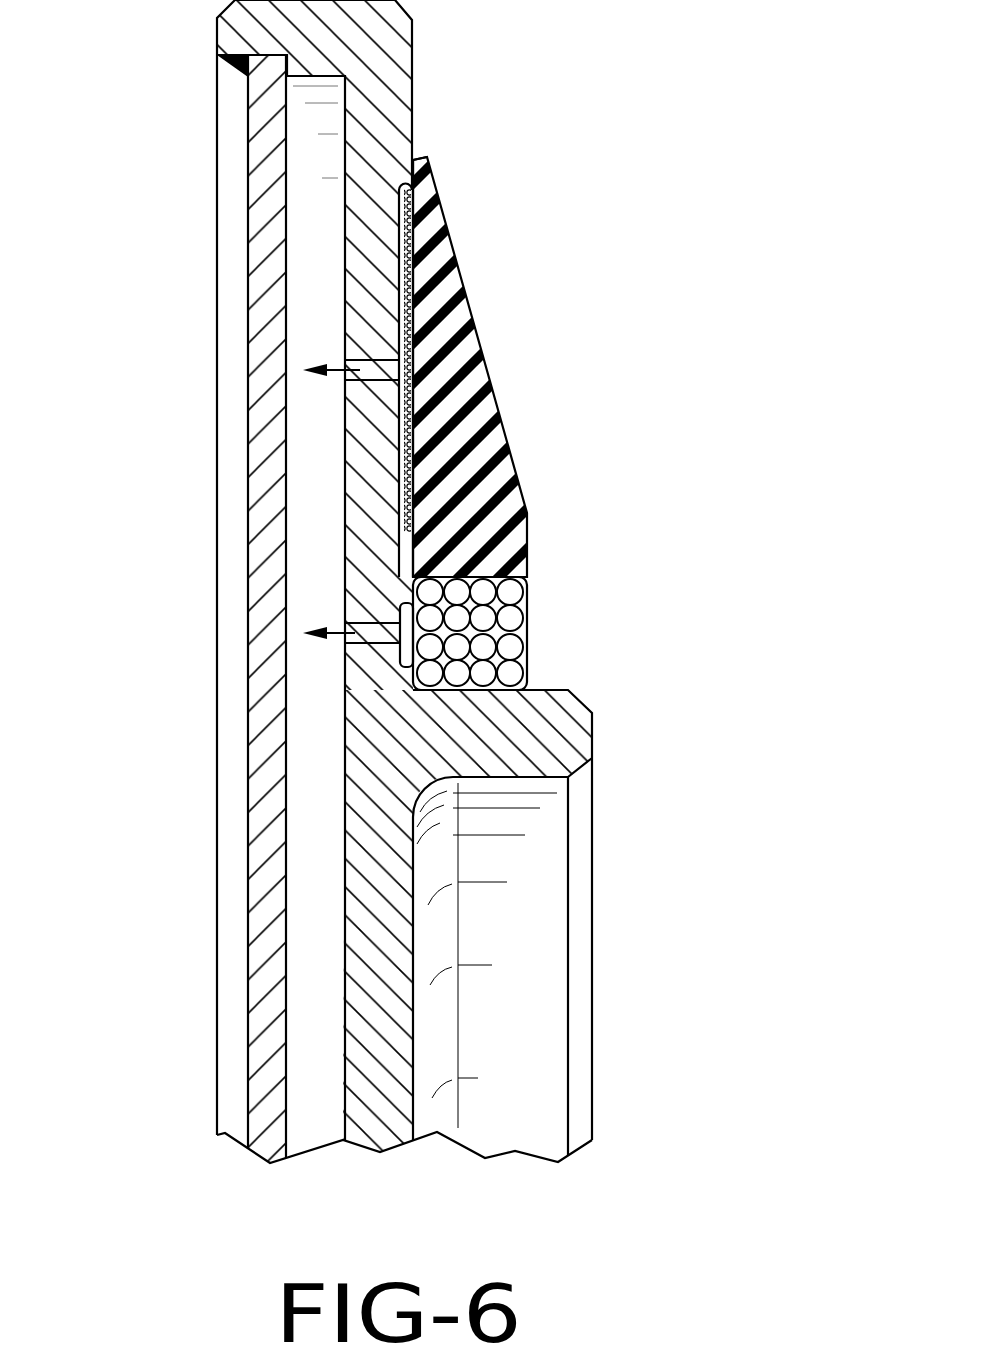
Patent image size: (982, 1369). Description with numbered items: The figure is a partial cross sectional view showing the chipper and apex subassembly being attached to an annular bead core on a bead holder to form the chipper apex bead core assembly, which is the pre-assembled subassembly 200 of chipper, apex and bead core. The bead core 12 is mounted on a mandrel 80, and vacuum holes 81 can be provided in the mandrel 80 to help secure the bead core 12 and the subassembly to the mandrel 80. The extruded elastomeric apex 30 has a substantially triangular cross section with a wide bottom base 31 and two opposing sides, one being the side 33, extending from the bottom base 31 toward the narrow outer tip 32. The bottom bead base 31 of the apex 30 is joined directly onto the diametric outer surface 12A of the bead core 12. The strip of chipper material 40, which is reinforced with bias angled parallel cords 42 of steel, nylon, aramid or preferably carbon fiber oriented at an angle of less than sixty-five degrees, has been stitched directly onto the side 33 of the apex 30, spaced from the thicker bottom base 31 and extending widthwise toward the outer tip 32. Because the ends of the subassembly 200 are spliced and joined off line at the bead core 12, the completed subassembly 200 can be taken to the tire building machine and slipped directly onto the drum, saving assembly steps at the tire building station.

The bead core 12 is at (564, 599).
The diametric outer surface 12A is at (498, 577).
The apex 30 is at (563, 343).
The bottom base 31 is at (443, 578).
The outer tip 32 is at (418, 167).
The side 33 is at (387, 283).
The chipper material 40 is at (415, 417).
The cords 42 is at (418, 368).
The mandrel 80 is at (256, 254).
The vacuum holes 81 is at (377, 373).
The subassembly 200 is at (598, 401).